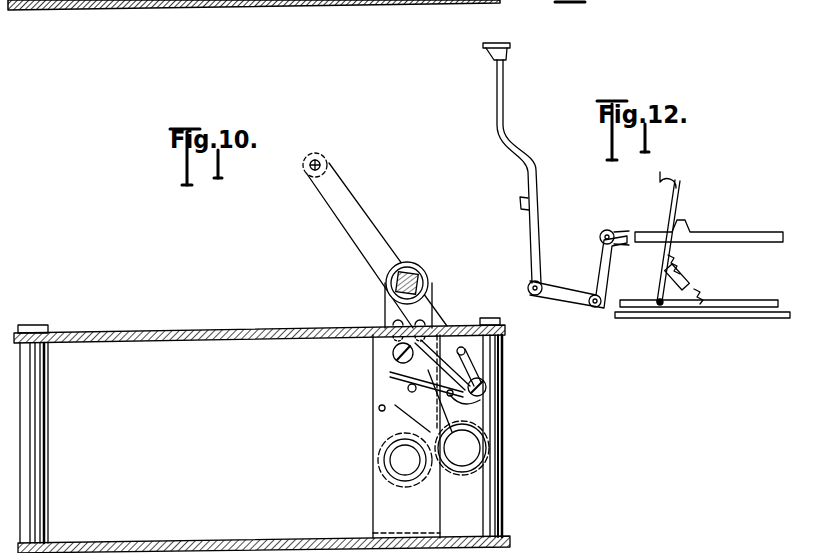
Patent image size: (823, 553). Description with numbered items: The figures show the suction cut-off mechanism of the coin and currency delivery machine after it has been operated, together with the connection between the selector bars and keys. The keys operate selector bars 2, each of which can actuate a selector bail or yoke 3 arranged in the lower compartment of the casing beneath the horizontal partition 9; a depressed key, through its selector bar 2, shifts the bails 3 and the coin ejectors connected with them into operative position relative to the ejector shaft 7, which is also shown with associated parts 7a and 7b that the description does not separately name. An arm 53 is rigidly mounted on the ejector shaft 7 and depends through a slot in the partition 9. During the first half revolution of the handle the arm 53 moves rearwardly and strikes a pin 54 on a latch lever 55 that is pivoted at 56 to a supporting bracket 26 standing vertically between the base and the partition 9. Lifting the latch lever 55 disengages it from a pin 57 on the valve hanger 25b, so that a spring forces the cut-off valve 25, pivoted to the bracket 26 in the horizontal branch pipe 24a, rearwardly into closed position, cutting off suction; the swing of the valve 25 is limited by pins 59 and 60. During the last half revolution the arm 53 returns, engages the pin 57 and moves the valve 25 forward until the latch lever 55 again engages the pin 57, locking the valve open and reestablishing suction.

In FIG. 12, the selector bar 2 is at (737, 234).
In FIG. 12, the selector bail 3 is at (660, 279).
In FIG. 10, the ejector shaft 7 is at (412, 285).
In FIG. 10, the arm 7a is at (362, 212).
In FIG. 10, the arm end pivot 7b is at (305, 173).
In FIG. 10, the horizontal partition 9 is at (250, 332).
In FIG. 10, the horizontal branch pipe 24a is at (405, 460).
In FIG. 10, the cut-off valve 25 is at (445, 477).
In FIG. 10, the valve hanger 25b is at (424, 414).
In FIG. 10, the supporting bracket 26 is at (406, 436).
In FIG. 10, the arm 53 is at (445, 342).
In FIG. 10, the pin 54 is at (466, 351).
In FIG. 10, the latch lever 55 is at (447, 392).
In FIG. 10, the pivot 56 is at (487, 385).
In FIG. 10, the pin 57 is at (408, 388).
In FIG. 10, the pin 59 is at (480, 400).
In FIG. 10, the pin 60 is at (378, 409).